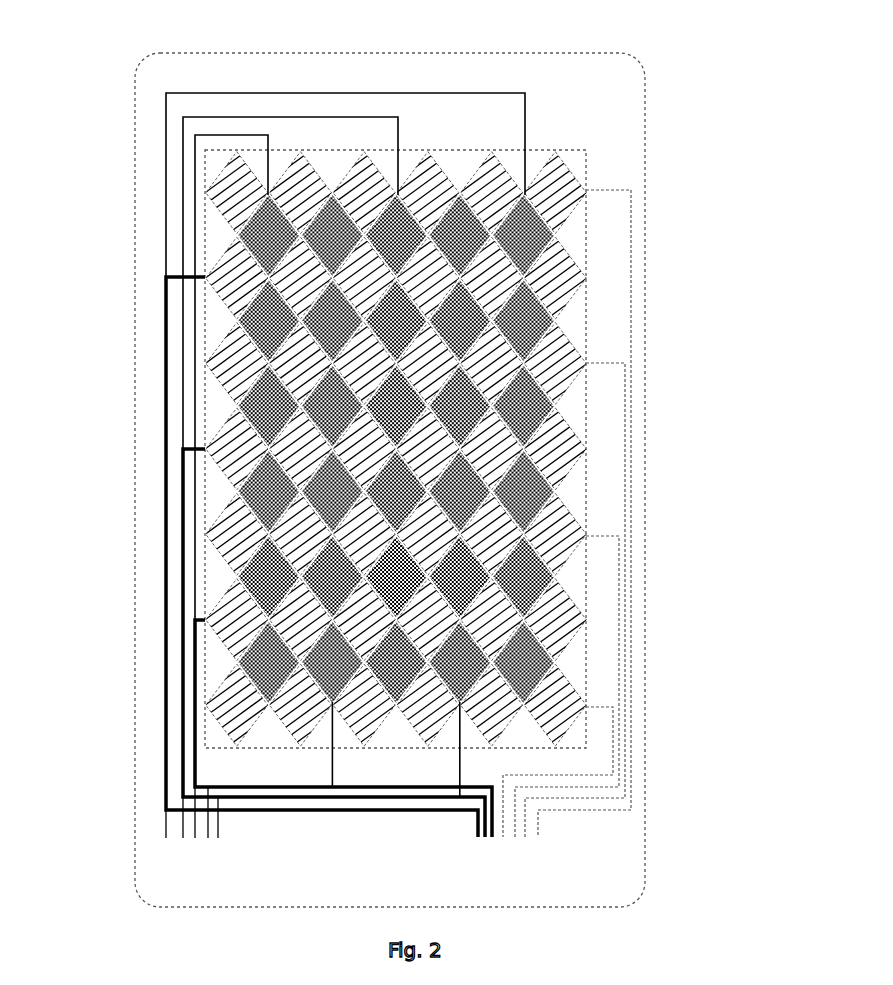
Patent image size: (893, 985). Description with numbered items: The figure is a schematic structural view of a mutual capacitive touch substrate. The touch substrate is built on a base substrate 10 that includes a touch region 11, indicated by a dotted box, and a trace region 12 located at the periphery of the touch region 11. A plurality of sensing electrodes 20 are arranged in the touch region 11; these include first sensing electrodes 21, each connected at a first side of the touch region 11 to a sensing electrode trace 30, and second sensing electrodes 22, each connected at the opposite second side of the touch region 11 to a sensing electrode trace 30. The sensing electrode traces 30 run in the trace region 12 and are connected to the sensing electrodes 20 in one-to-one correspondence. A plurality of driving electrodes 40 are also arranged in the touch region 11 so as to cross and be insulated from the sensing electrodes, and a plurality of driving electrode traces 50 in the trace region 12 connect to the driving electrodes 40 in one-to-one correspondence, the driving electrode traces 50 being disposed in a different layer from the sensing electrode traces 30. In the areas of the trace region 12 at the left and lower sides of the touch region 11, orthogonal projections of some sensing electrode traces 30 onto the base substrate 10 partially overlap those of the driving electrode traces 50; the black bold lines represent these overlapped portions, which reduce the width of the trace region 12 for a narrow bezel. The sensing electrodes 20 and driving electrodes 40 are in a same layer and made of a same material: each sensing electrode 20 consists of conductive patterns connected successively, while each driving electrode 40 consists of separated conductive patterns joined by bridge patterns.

The base substrate 10 is at (449, 480).
The touch region 11 is at (590, 160).
The trace region 12 is at (630, 183).
The sensing electrodes 20 is at (340, 449).
The first sensing electrodes 21 is at (232, 188).
The second sensing electrodes 22 is at (235, 265).
The sensing electrode traces 30 is at (630, 352).
The driving electrodes 40 is at (528, 580).
The driving electrode traces 50 is at (337, 93).